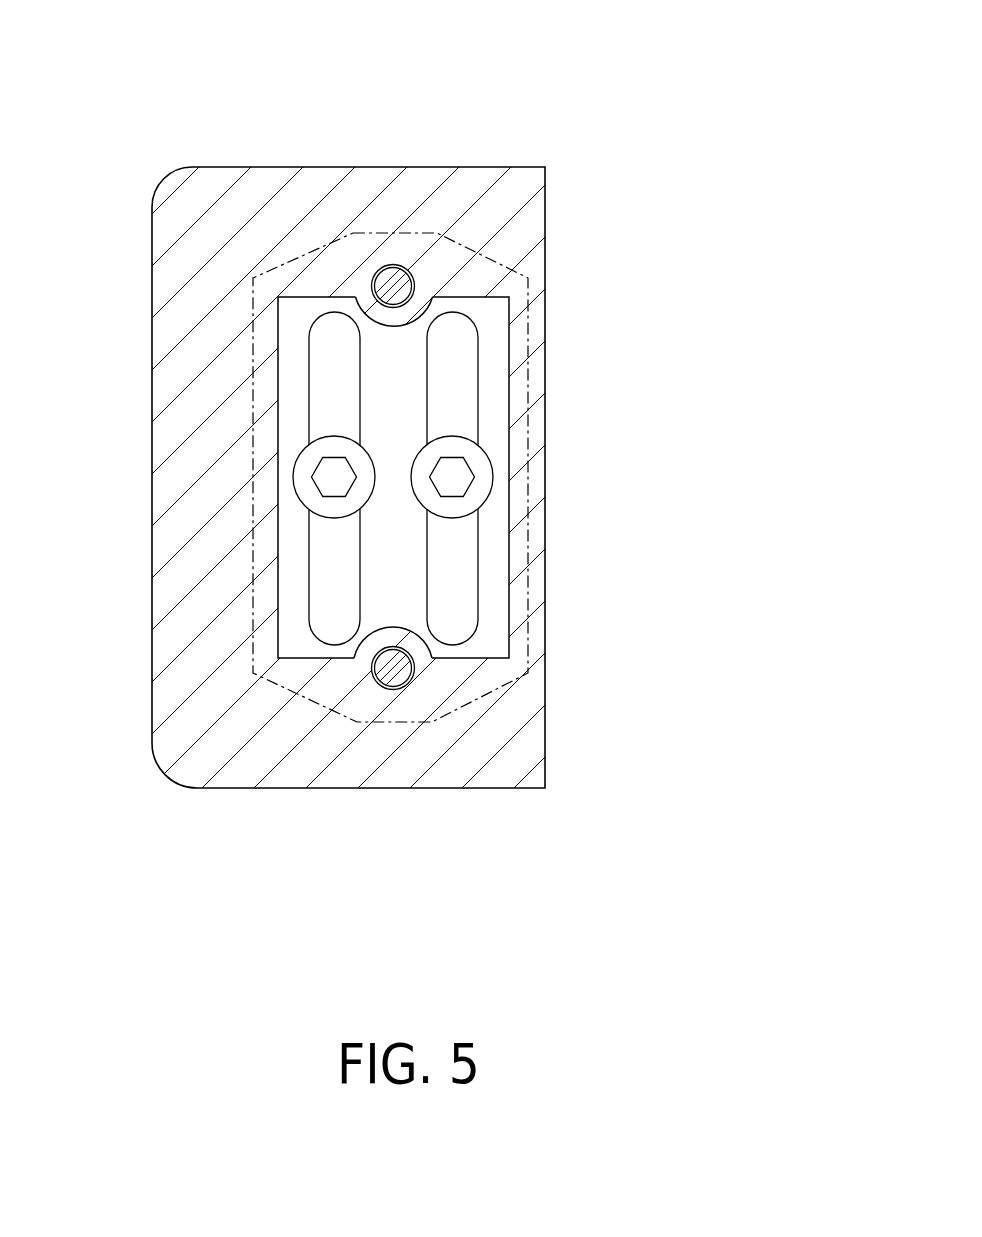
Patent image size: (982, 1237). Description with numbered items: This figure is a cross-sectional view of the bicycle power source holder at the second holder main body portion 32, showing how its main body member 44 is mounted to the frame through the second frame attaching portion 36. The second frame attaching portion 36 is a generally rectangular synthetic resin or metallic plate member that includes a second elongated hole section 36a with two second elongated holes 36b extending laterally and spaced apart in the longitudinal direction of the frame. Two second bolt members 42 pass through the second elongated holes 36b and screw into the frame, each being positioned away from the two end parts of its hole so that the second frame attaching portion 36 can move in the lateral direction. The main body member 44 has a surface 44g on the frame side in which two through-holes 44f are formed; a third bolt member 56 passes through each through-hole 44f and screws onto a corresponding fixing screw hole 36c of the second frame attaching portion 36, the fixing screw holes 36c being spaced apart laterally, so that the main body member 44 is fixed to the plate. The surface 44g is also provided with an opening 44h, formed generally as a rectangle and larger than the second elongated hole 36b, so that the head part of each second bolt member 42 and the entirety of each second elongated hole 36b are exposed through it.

The second holder main body portion 32 is at (481, 152).
The second frame attaching portion 36 is at (283, 687).
The second elongated hole section 36a is at (301, 399).
The second elongated hole 36b is at (427, 535).
The fixing screw hole 36c is at (414, 280).
The second bolt member 42 is at (363, 450).
The main body member 44 is at (442, 804).
The through-hole 44f is at (368, 325).
The surface 44g is at (193, 202).
The opening 44h is at (512, 580).
The third bolt member 56 is at (379, 270).